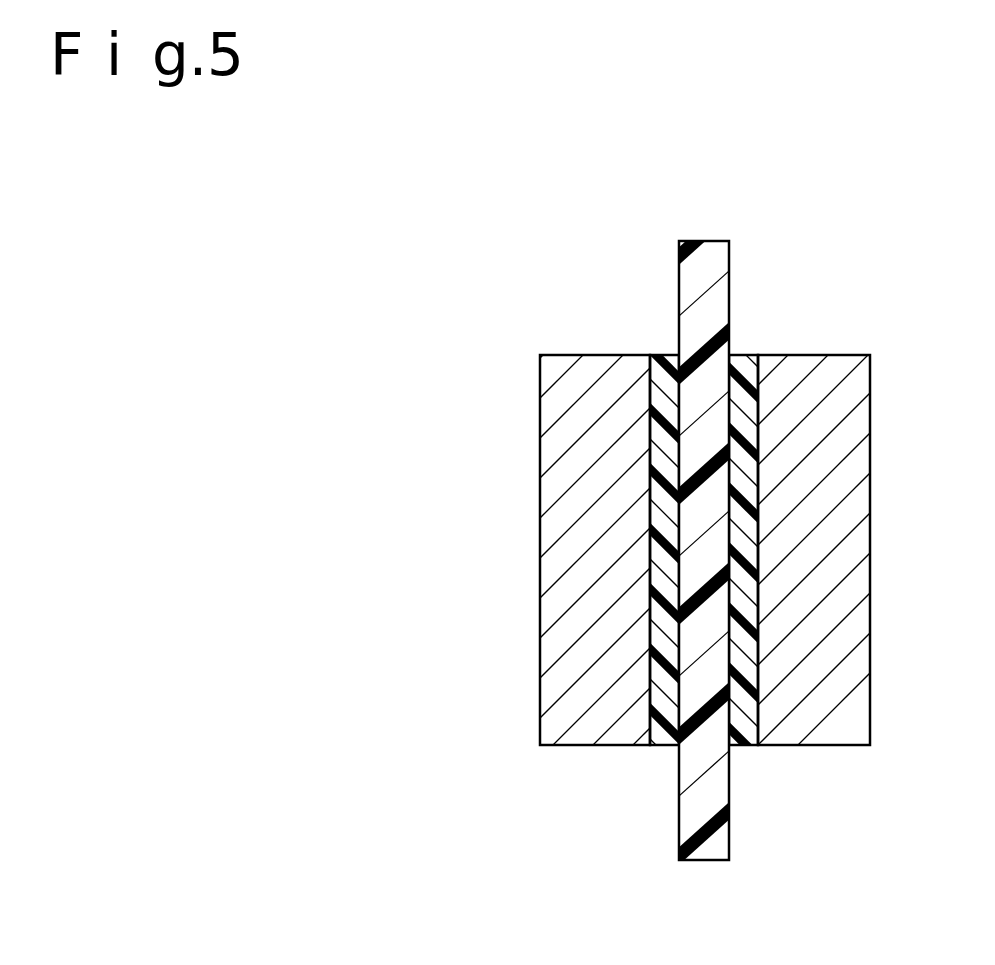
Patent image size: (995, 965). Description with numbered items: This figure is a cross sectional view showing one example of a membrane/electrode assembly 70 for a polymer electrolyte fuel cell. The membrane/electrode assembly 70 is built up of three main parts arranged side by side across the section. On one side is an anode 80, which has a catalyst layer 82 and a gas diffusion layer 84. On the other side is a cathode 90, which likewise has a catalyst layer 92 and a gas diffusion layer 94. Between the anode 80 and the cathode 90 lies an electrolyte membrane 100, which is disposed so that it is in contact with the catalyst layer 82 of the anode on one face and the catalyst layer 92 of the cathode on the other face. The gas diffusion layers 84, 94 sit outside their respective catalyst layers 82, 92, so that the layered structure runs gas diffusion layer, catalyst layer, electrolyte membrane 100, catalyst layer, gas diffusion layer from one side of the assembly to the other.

The membrane/electrode assembly 70 is at (803, 251).
The anode 80 is at (663, 833).
The catalyst layer 82 is at (663, 735).
The gas diffusion layer 84 is at (578, 730).
The cathode 90 is at (870, 833).
The catalyst layer 92 is at (742, 722).
The gas diffusion layer 94 is at (830, 730).
The electrolyte membrane 100 is at (705, 817).